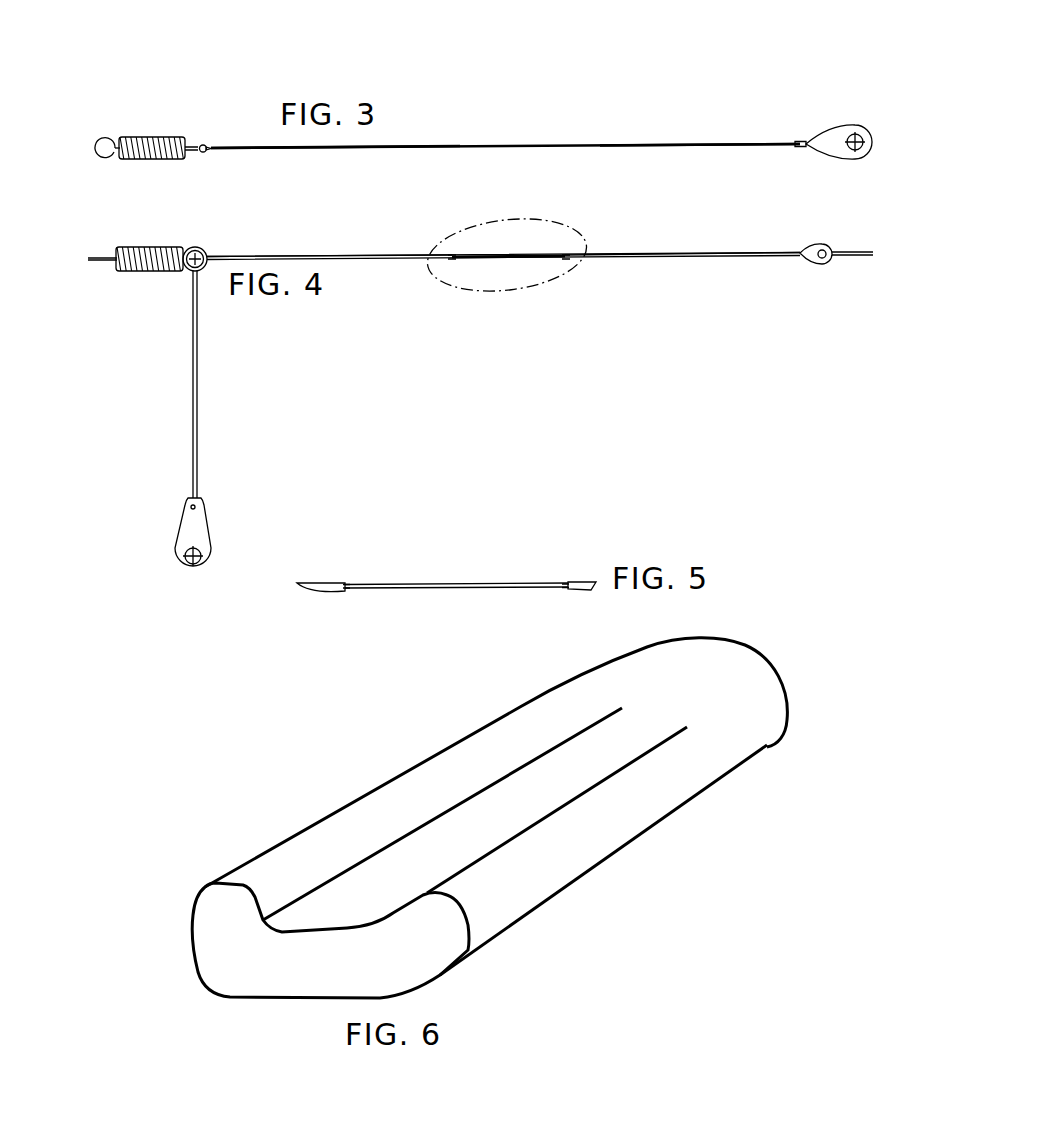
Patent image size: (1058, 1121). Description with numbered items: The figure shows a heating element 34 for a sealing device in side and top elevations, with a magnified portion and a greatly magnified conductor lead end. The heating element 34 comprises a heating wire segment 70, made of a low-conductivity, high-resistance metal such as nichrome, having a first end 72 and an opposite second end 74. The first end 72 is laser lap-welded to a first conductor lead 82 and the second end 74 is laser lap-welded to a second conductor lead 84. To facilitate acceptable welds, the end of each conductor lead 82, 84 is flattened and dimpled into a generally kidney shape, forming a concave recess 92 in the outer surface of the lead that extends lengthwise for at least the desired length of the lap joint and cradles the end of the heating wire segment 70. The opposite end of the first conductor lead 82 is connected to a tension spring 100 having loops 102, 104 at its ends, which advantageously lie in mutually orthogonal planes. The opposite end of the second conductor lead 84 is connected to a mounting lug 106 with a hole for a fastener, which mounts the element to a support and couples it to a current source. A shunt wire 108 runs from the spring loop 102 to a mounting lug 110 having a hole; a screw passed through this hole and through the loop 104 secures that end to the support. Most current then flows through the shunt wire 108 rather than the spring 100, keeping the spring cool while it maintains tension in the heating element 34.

In FIG. 3, the heating element 34 is at (813, 109).
In FIG. 4, the heating element 34 is at (758, 305).
In FIG. 3, the heating wire segment 70 is at (515, 146).
In FIG. 4, the heating wire segment 70 is at (515, 255).
In FIG. 5, the heating wire segment 70 is at (440, 584).
In FIG. 4, the first end 72 is at (455, 265).
In FIG. 5, the first end 72 is at (345, 596).
In FIG. 4, the second end 74 is at (560, 266).
In FIG. 5, the second end 74 is at (568, 596).
In FIG. 3, the first conductor lead 82 is at (330, 150).
In FIG. 4, the first conductor lead 82 is at (385, 262).
In FIG. 5, the first conductor lead 82 is at (320, 582).
In FIG. 6, the first conductor lead 82 is at (742, 783).
In FIG. 3, the second conductor lead 84 is at (722, 145).
In FIG. 4, the second conductor lead 84 is at (650, 258).
In FIG. 5, the second conductor lead 84 is at (590, 582).
In FIG. 6, the concave recess 92 is at (378, 885).
In FIG. 3, the tension spring 100 is at (172, 134).
In FIG. 4, the tension spring 100 is at (178, 214).
In FIG. 3, the loop 102 is at (206, 140).
In FIG. 4, the loop 102 is at (207, 250).
In FIG. 3, the loop 104 is at (100, 139).
In FIG. 4, the loop 104 is at (93, 263).
In FIG. 3, the mounting lug 106 is at (845, 133).
In FIG. 4, the mounting lug 106 is at (830, 250).
In FIG. 4, the shunt wire 108 is at (198, 382).
In FIG. 4, the mounting lug 110 is at (185, 526).